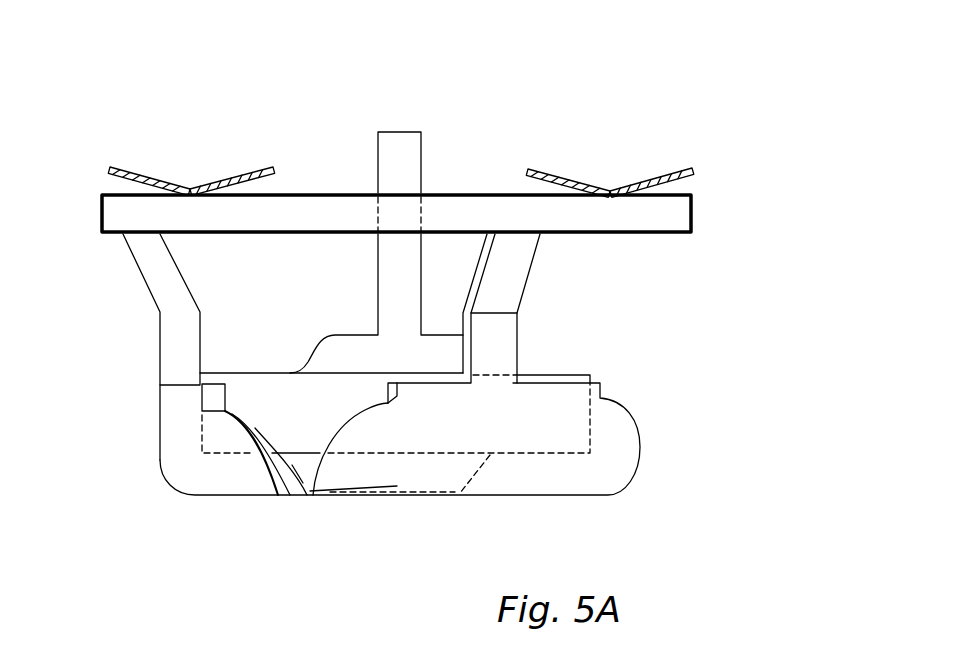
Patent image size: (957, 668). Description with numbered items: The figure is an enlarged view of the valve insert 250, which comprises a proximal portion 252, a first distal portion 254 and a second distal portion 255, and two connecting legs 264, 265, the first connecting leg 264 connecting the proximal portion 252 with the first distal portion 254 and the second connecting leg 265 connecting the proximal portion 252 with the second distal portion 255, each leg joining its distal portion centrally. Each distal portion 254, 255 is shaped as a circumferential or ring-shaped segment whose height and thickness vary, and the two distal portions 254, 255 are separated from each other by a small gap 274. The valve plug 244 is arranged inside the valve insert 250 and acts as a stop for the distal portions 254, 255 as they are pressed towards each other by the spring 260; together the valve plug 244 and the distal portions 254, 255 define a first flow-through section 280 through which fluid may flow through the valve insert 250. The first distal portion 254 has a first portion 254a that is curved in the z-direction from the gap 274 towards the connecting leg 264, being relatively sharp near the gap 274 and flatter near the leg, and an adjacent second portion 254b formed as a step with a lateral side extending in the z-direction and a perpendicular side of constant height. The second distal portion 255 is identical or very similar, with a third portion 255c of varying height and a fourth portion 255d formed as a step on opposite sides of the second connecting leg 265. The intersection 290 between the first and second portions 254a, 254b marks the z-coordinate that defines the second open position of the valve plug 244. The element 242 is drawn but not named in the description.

The valve insert 250 is at (700, 108).
The proximal portion 252 is at (561, 201).
The spring 260 is at (150, 170).
The pin 242 is at (393, 311).
The valve plug 244 is at (458, 328).
The first connecting leg 264 is at (512, 282).
The second connecting leg 265 is at (163, 290).
The first distal portion 254 is at (633, 393).
The first portion of the first distal portion 254a is at (357, 428).
The second portion of the first distal portion 254b is at (403, 388).
The intersection 290 is at (403, 403).
The second distal portion 255 is at (150, 440).
The third portion of the second distal portion 255c is at (253, 457).
The fourth portion of the second distal portion 255d is at (199, 401).
The gap 274 is at (311, 494).
The first flow-through section 280 is at (377, 494).